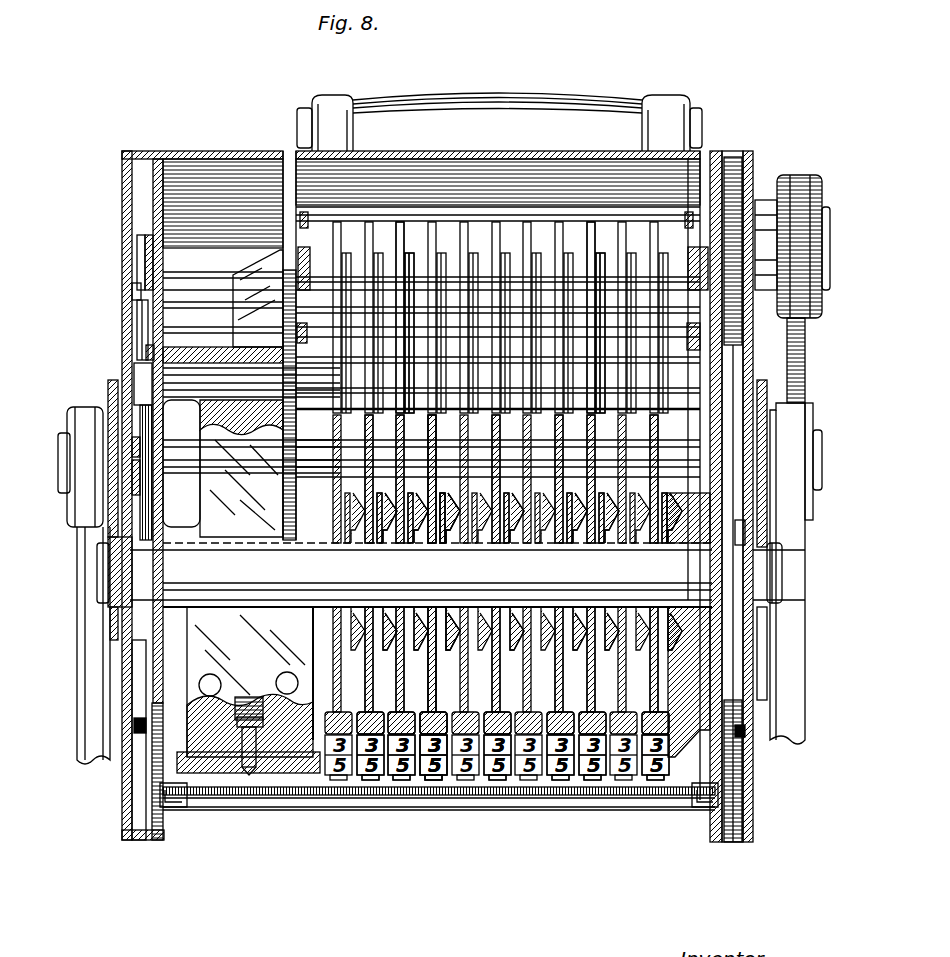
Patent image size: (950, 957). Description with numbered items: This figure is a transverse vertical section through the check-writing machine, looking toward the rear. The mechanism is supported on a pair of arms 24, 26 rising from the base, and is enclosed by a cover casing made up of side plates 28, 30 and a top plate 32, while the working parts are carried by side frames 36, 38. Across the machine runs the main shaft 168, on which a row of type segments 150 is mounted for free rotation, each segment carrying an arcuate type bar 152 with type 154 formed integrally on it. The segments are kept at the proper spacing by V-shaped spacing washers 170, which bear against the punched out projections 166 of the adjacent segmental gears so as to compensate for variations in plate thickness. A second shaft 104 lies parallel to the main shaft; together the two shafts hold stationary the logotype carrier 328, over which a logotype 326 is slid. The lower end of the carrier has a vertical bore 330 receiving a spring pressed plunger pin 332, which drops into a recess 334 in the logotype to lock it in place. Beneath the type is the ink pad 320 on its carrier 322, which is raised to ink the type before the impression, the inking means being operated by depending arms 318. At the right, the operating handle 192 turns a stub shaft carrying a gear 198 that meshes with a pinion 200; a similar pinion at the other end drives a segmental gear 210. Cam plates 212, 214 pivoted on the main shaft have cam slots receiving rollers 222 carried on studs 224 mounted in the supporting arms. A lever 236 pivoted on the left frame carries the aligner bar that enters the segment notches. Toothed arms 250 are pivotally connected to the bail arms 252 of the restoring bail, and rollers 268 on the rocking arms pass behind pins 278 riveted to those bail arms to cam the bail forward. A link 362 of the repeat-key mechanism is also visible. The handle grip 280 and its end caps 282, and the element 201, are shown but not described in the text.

The arm 24 is at (798, 700).
The arm 26 is at (80, 728).
The side plate 28 is at (750, 152).
The side plate 30 is at (125, 228).
The top plate 32 is at (258, 142).
The side frame 36 is at (718, 162).
The side frame 38 is at (163, 162).
The shaft 104 is at (160, 360).
The type segment 150 is at (416, 606).
The type bar 152 is at (486, 776).
The type 154 is at (423, 776).
The punched out projection 166 is at (510, 545).
The shaft 168 is at (342, 556).
The spacing washer 170 is at (366, 605).
The operating handle 192 is at (810, 180).
The gear 198 is at (757, 185).
The pinion 200 is at (742, 334).
The lever 201 is at (740, 530).
The segmental gear 210 is at (118, 358).
The cam plate 212 is at (766, 385).
The cam plate 214 is at (112, 378).
The roller 222 is at (120, 395).
The stud 224 is at (78, 400).
The lever 236 is at (148, 350).
The toothed arm 250 is at (300, 262).
The bail arm 252 is at (300, 355).
The roller 268 is at (302, 337).
The pin 278 is at (335, 345).
The handle 280 is at (567, 112).
The handle cap 282 is at (300, 107).
The depending arm 318 is at (138, 733).
The ink pad 320 is at (468, 792).
The carrier 322 is at (480, 804).
The logotype 326 is at (210, 772).
The logotype carrier 328 is at (300, 740).
The vertical bore 330 is at (290, 738).
The plunger pin 332 is at (250, 760).
The recess 334 is at (248, 760).
The link 362 is at (148, 256).